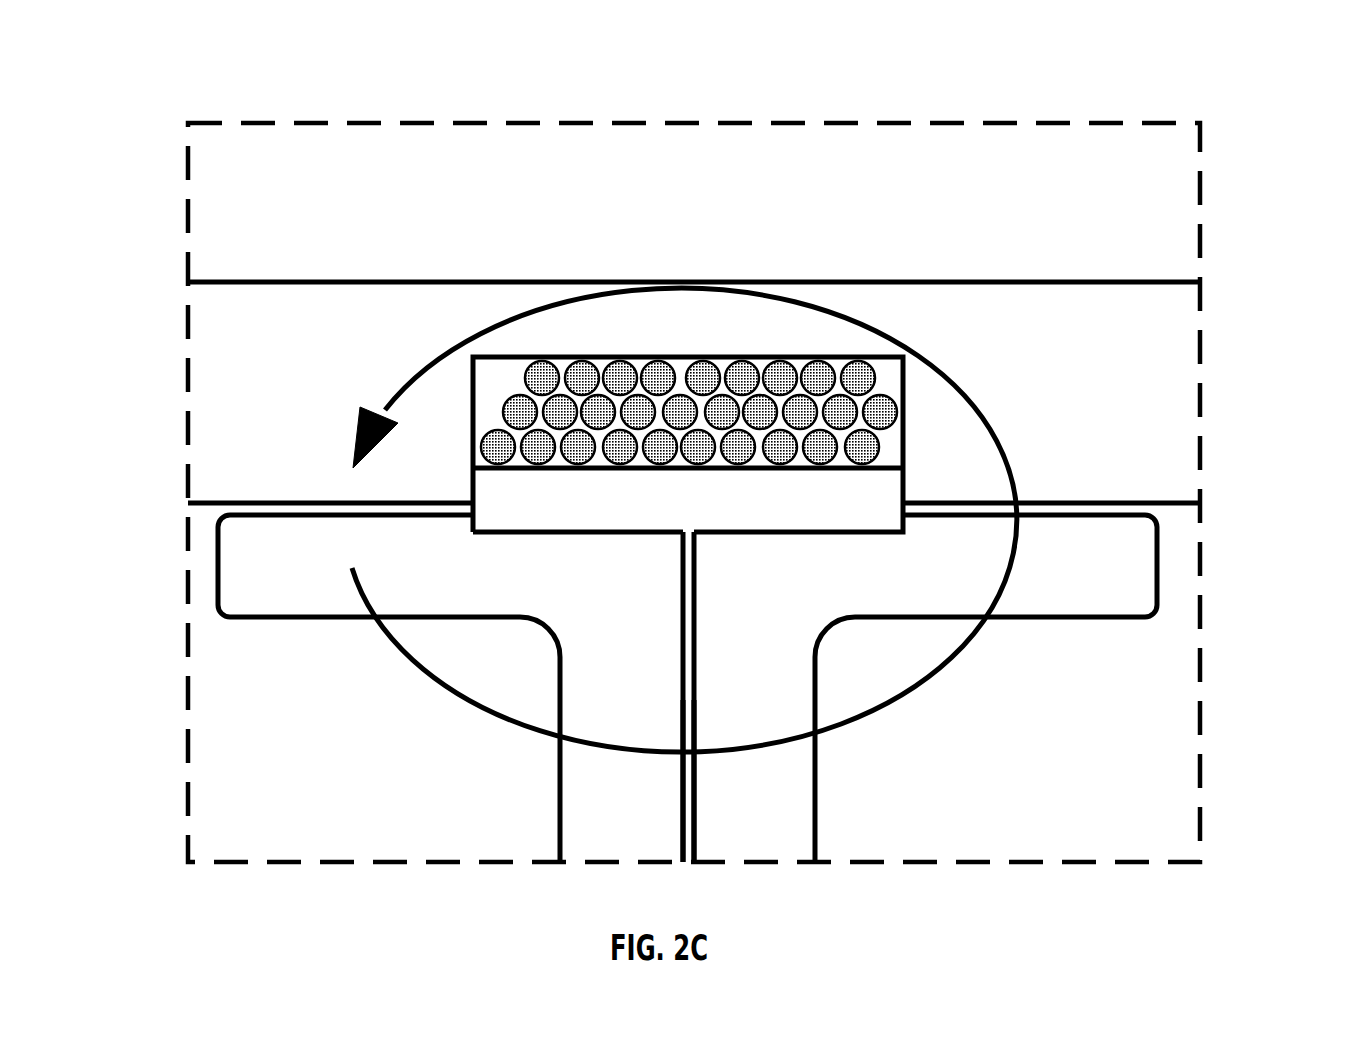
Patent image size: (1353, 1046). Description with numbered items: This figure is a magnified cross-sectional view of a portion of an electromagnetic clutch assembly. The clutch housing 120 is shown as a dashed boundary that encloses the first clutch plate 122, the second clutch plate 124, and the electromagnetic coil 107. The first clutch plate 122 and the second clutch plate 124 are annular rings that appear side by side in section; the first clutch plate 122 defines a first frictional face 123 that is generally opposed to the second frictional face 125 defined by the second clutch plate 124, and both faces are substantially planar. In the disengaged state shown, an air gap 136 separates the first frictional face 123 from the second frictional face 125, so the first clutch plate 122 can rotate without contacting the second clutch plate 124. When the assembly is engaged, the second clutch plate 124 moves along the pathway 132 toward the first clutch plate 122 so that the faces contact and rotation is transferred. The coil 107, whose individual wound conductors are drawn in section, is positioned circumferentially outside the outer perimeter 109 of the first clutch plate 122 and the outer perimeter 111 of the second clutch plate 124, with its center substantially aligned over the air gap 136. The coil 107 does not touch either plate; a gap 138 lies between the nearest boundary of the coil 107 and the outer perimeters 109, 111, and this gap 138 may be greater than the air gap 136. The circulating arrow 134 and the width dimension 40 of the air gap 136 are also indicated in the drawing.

The electromagnetic coil 107 is at (760, 382).
The outer perimeter of first clutch plate 109 is at (313, 510).
The outer perimeter of second clutch plate 111 is at (1113, 510).
The clutch housing 120 is at (218, 328).
The first clutch plate 122 is at (258, 582).
The first frictional face 123 is at (680, 810).
The second clutch plate 124 is at (1133, 602).
The second frictional face 125 is at (697, 792).
The pathway 132 is at (932, 821).
The circulation path 134 is at (998, 437).
The air gap 136 is at (685, 620).
The gap 138 is at (782, 471).
The channel width 40 is at (657, 655).